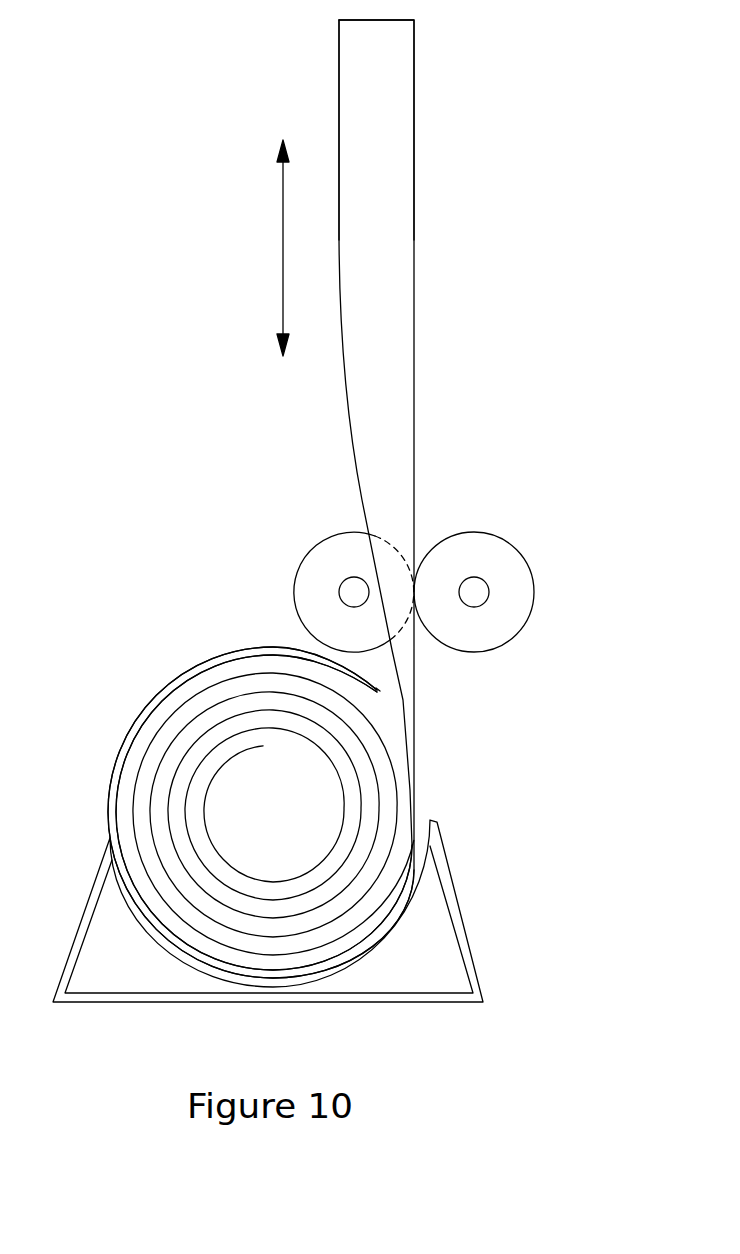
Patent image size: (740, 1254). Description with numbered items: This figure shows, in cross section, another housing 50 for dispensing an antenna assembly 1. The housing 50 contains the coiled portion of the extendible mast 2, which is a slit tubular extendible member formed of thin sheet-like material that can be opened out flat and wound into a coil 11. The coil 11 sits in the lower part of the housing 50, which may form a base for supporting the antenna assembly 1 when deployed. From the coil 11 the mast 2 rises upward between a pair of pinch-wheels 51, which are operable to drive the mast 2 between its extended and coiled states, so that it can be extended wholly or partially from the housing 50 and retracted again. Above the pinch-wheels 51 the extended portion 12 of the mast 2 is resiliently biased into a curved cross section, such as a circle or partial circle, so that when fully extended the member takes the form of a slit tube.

The assembly 1 is at (443, 267).
The extendible mast 2 is at (387, 383).
The extended portion 12 is at (388, 185).
The coil 11 is at (130, 772).
The pinch-wheel 51 is at (316, 566).
The housing 50 is at (477, 967).